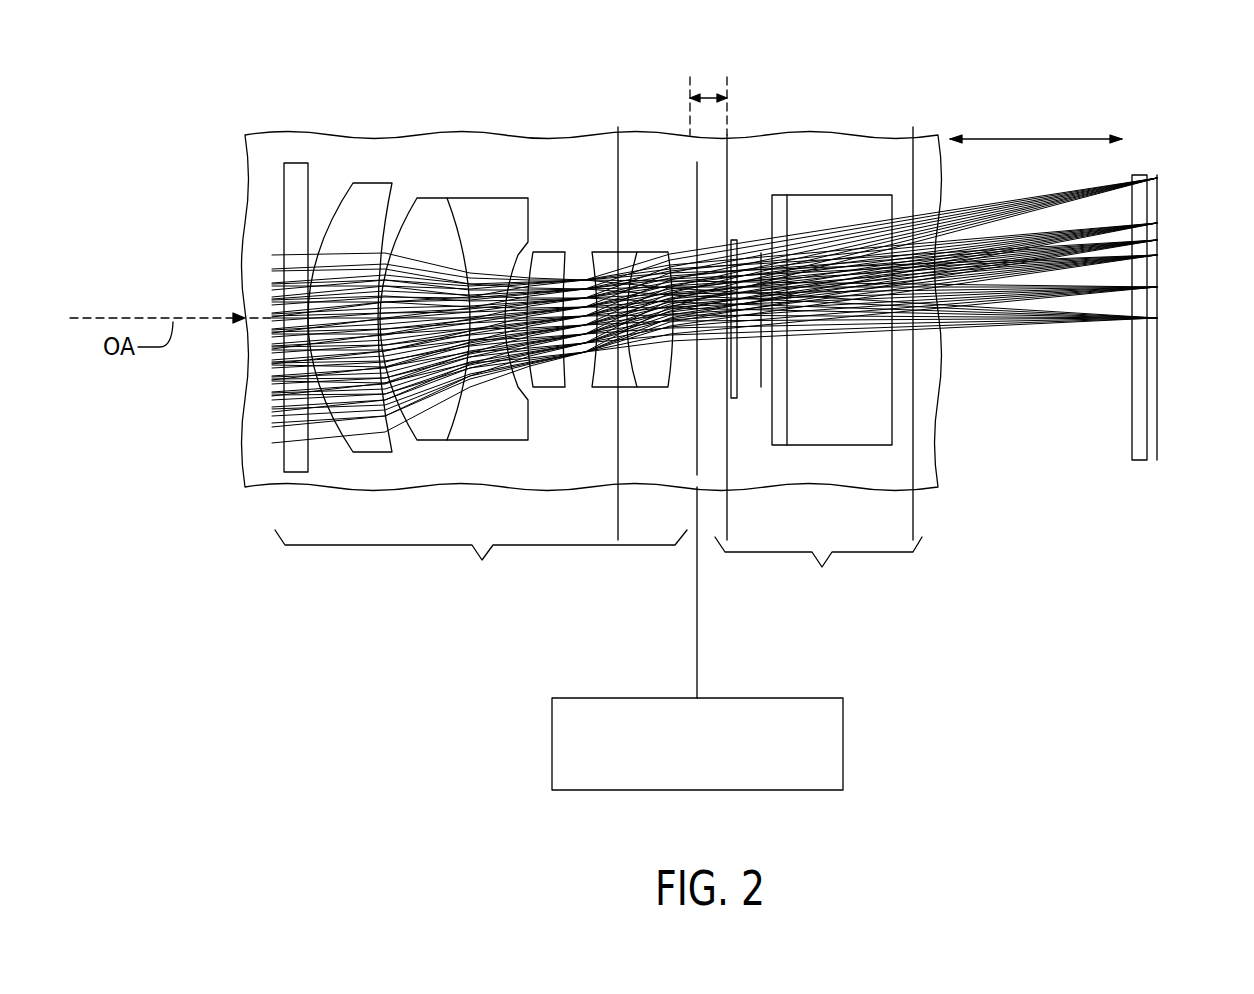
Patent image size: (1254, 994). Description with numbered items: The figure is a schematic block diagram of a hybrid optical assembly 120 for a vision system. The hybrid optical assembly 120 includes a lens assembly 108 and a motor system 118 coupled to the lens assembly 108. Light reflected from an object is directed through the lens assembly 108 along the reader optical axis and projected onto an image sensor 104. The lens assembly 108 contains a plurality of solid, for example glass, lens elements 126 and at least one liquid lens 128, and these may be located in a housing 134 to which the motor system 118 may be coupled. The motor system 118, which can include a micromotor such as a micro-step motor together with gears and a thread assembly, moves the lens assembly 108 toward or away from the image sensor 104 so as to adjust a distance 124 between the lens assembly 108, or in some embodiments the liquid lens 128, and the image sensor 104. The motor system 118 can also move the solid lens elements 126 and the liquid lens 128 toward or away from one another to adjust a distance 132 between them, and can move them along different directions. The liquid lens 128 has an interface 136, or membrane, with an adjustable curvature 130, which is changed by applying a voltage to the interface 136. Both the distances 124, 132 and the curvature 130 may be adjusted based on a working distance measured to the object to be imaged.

The image sensor 104 is at (1158, 298).
The lens assembly 108 is at (240, 457).
The motor system 118 is at (697, 790).
The hybrid optical assembly 120 is at (556, 93).
The distance 124 is at (1040, 136).
The plurality of solid lens elements 126 is at (481, 389).
The liquid lens 128 is at (818, 376).
The adjustable curvature 130 is at (772, 355).
The distance 132 is at (707, 92).
The housing 134 is at (243, 275).
The liquid lens interface 136 is at (779, 195).